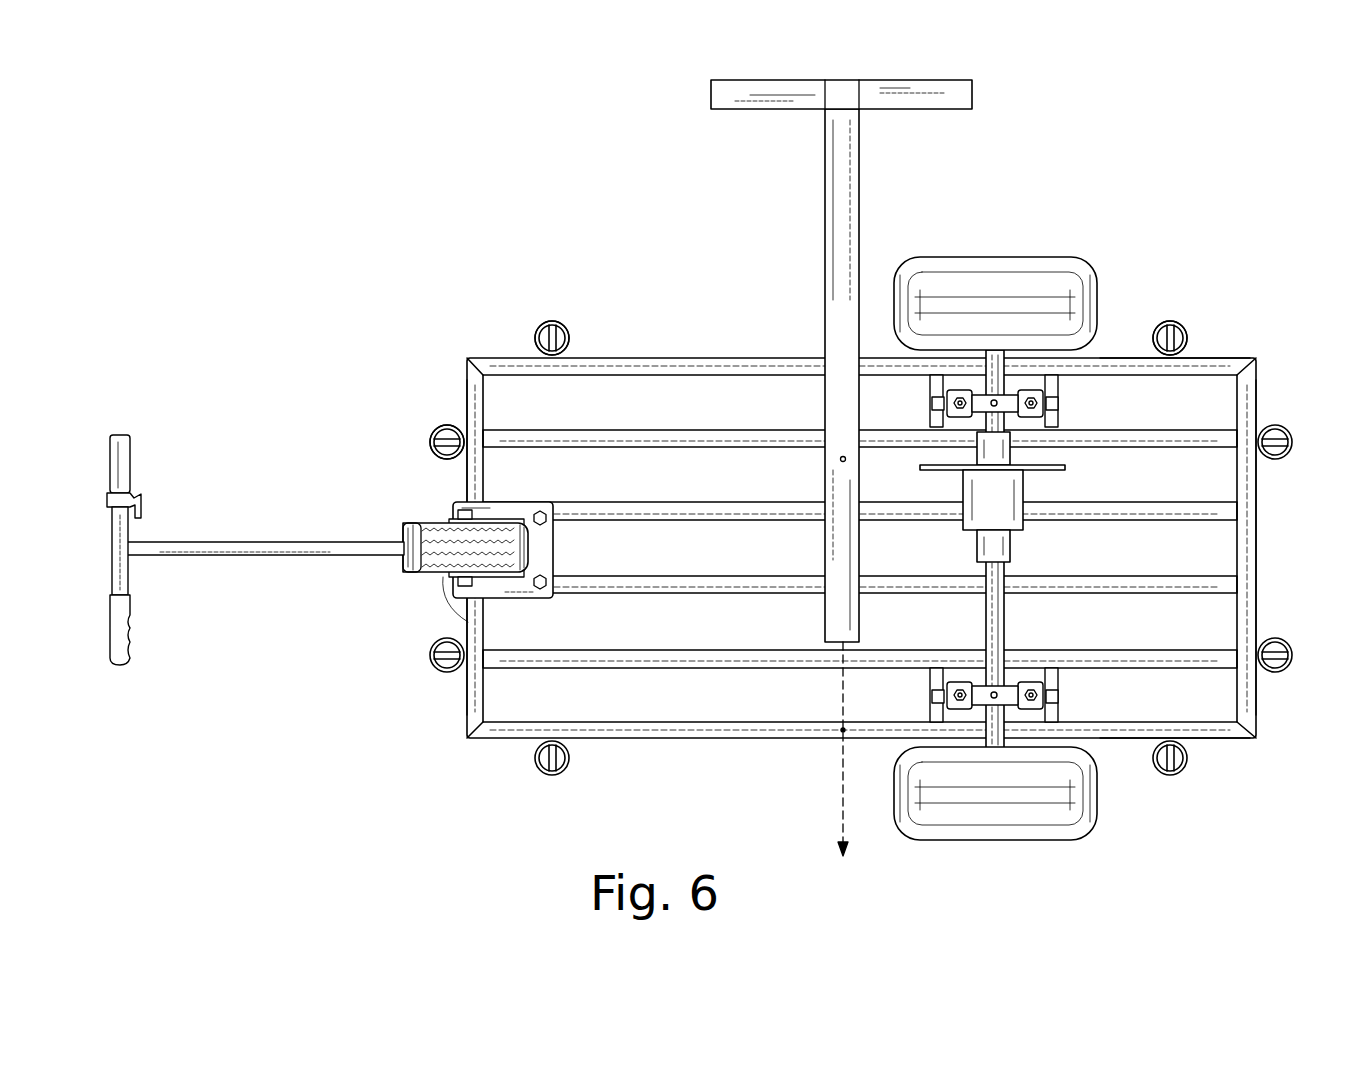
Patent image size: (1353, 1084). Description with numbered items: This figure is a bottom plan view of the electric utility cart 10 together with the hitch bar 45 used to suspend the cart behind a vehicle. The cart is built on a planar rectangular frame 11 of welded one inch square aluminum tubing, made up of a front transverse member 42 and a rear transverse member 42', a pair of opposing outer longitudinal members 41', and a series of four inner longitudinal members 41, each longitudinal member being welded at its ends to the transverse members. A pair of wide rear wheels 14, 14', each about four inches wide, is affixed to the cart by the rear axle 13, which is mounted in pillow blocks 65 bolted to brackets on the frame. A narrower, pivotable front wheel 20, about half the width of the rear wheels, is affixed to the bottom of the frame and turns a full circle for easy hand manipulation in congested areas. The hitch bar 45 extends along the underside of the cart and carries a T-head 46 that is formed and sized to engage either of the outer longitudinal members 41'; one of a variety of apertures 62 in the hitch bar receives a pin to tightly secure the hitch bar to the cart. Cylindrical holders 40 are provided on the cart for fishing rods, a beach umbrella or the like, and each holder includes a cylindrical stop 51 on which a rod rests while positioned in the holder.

The electric utility cart 10 is at (496, 281).
The planar rectangular frame 11 is at (643, 358).
The rear axle 13 is at (1005, 629).
The rear wheel 14 is at (1000, 280).
The rear wheel 14' is at (1004, 816).
The front wheel 20 is at (420, 521).
The cylindrical holder 40 is at (561, 326).
The inner longitudinal member 41 is at (860, 549).
The outer longitudinal member 41' is at (1177, 550).
The front transverse member 42 is at (445, 549).
The rear transverse member 42' is at (1285, 547).
The hitch bar 45 is at (818, 190).
The T-head 46 is at (722, 91).
The cylindrical stop 51 is at (548, 337).
The aperture 62 is at (839, 458).
The pillow block 65 is at (1033, 388).